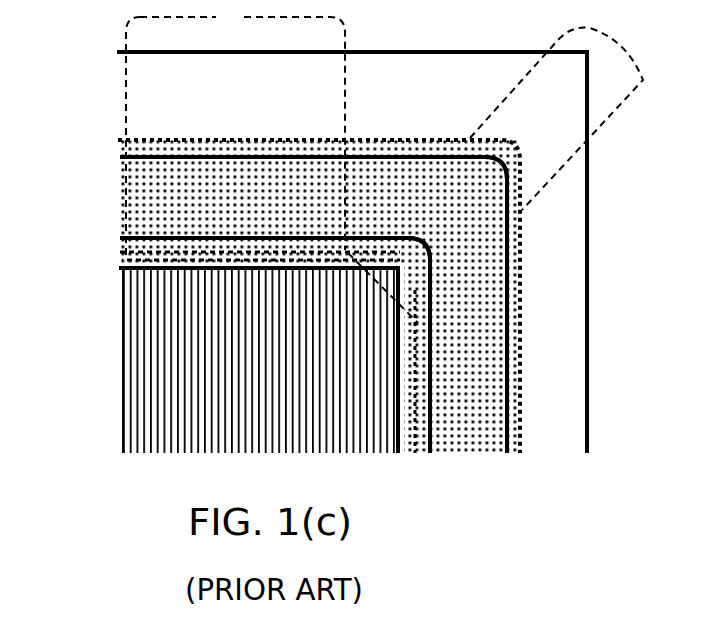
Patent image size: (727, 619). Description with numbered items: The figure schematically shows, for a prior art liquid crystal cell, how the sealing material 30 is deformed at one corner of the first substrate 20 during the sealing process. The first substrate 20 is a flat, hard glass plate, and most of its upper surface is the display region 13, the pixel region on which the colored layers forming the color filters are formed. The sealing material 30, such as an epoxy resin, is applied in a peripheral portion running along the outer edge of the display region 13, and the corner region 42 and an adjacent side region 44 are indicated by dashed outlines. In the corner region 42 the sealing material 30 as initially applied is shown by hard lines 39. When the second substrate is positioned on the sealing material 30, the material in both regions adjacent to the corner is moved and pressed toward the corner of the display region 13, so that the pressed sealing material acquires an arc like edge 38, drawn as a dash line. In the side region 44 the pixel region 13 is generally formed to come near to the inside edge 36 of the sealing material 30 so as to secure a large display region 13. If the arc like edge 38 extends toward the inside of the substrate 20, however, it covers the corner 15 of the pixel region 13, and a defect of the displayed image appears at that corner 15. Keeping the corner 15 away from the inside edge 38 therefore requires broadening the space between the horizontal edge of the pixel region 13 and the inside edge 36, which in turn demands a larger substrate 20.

The display region 13 is at (262, 370).
The corner of the pixel region 15 is at (432, 261).
The first substrate 20 is at (455, 52).
The sealing material 30 is at (140, 190).
The edge of the sealing material 36 is at (158, 140).
The arc like edge 38 is at (400, 294).
The hard lines 39 is at (427, 238).
The corner region 42 is at (495, 176).
The side region 44 is at (235, 130).